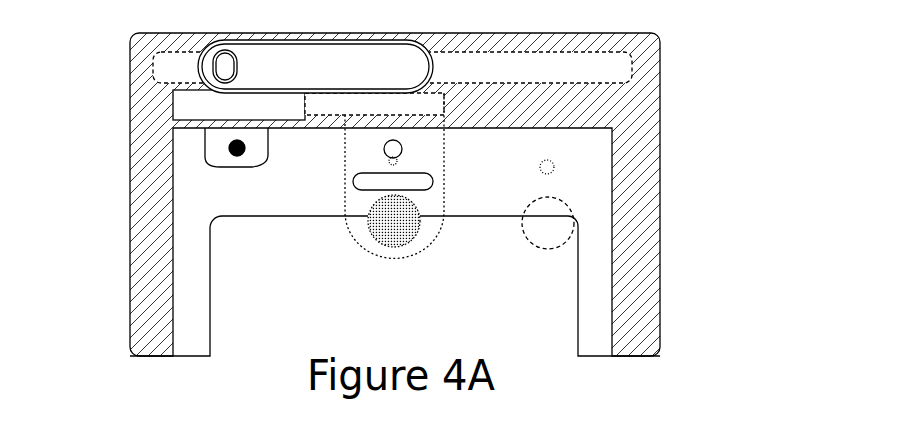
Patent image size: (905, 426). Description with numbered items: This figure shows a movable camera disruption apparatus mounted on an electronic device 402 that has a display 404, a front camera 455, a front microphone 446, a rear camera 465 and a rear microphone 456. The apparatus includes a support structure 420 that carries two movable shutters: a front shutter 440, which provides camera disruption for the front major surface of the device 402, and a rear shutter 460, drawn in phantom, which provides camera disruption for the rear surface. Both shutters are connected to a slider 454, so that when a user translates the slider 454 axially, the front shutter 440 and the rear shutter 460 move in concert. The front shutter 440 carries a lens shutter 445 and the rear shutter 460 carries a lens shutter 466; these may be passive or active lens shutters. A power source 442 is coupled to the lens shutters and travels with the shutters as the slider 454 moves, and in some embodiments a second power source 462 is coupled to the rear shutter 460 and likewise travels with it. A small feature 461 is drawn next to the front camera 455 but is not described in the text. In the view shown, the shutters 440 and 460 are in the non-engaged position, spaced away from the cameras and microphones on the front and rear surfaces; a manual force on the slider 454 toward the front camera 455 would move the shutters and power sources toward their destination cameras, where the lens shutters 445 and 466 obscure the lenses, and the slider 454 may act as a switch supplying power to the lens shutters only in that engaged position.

The electronic device 402 is at (612, 265).
The display 404 is at (578, 333).
The support structure 420 is at (642, 52).
The front shutter 440 is at (205, 140).
The power source 442 is at (173, 105).
The lens shutter 445 is at (233, 150).
The front microphone 446 is at (350, 180).
The slider 454 is at (200, 63).
The front camera 455 is at (384, 150).
The rear microphone 456 is at (558, 162).
The rear shutter 460 is at (444, 142).
The sensor element 461 is at (400, 162).
The second power source 462 is at (445, 100).
The rear camera 465 is at (567, 203).
The lens shutter 466 is at (369, 233).